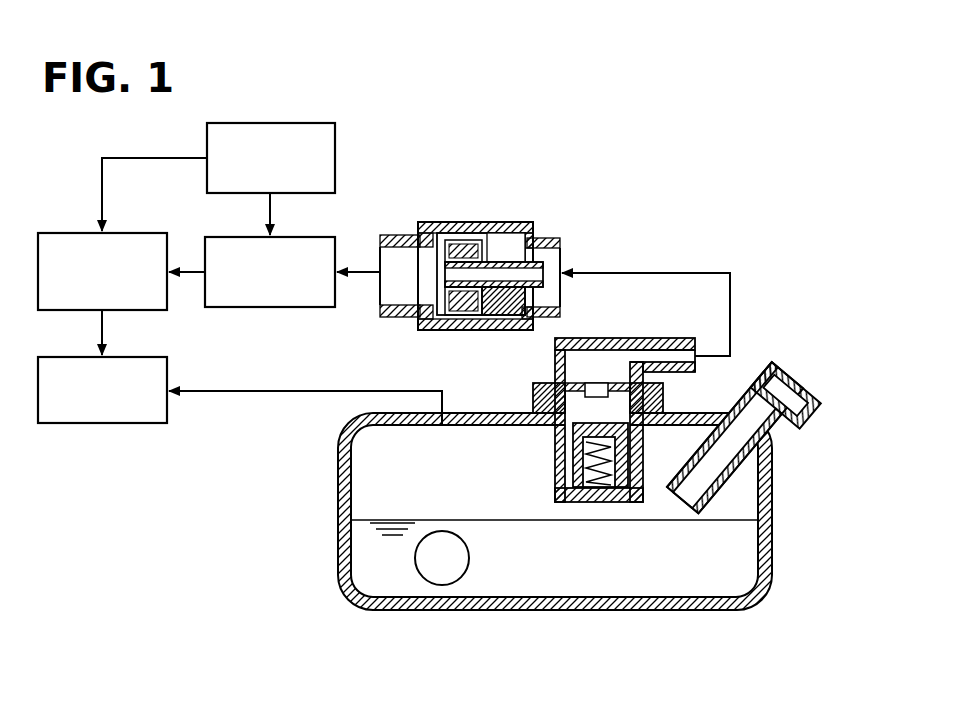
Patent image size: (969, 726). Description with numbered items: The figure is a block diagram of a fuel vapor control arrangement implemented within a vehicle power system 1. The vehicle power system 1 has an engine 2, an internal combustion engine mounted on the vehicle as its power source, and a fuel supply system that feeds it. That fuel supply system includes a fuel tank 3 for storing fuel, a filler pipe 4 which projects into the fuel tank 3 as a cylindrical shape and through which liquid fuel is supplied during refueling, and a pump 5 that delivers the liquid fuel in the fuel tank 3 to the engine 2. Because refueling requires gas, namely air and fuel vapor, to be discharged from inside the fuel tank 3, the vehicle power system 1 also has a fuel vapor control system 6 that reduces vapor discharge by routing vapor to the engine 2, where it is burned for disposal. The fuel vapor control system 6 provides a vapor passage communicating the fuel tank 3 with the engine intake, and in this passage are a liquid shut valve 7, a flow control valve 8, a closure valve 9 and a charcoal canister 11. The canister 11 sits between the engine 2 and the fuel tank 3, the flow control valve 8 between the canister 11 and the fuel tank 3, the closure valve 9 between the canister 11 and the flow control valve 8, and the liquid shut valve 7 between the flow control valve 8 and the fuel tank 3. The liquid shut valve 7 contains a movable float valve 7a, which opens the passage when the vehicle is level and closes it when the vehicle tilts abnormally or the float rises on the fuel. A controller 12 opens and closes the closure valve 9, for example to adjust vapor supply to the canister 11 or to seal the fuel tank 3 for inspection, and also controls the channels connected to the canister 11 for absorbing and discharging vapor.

The vehicle power system 1 is at (732, 190).
The engine 2 is at (125, 357).
The fuel tank 3 is at (462, 413).
The filler pipe 4 is at (692, 458).
The pump 5 is at (415, 562).
The fuel vapor control system 6 is at (627, 188).
The liquid shut valve 7 is at (590, 404).
The float valve 7a is at (558, 450).
The flow control valve 8 is at (506, 223).
The closure valve 9 is at (303, 237).
The charcoal canister 11 is at (125, 233).
The controller 12 is at (292, 123).